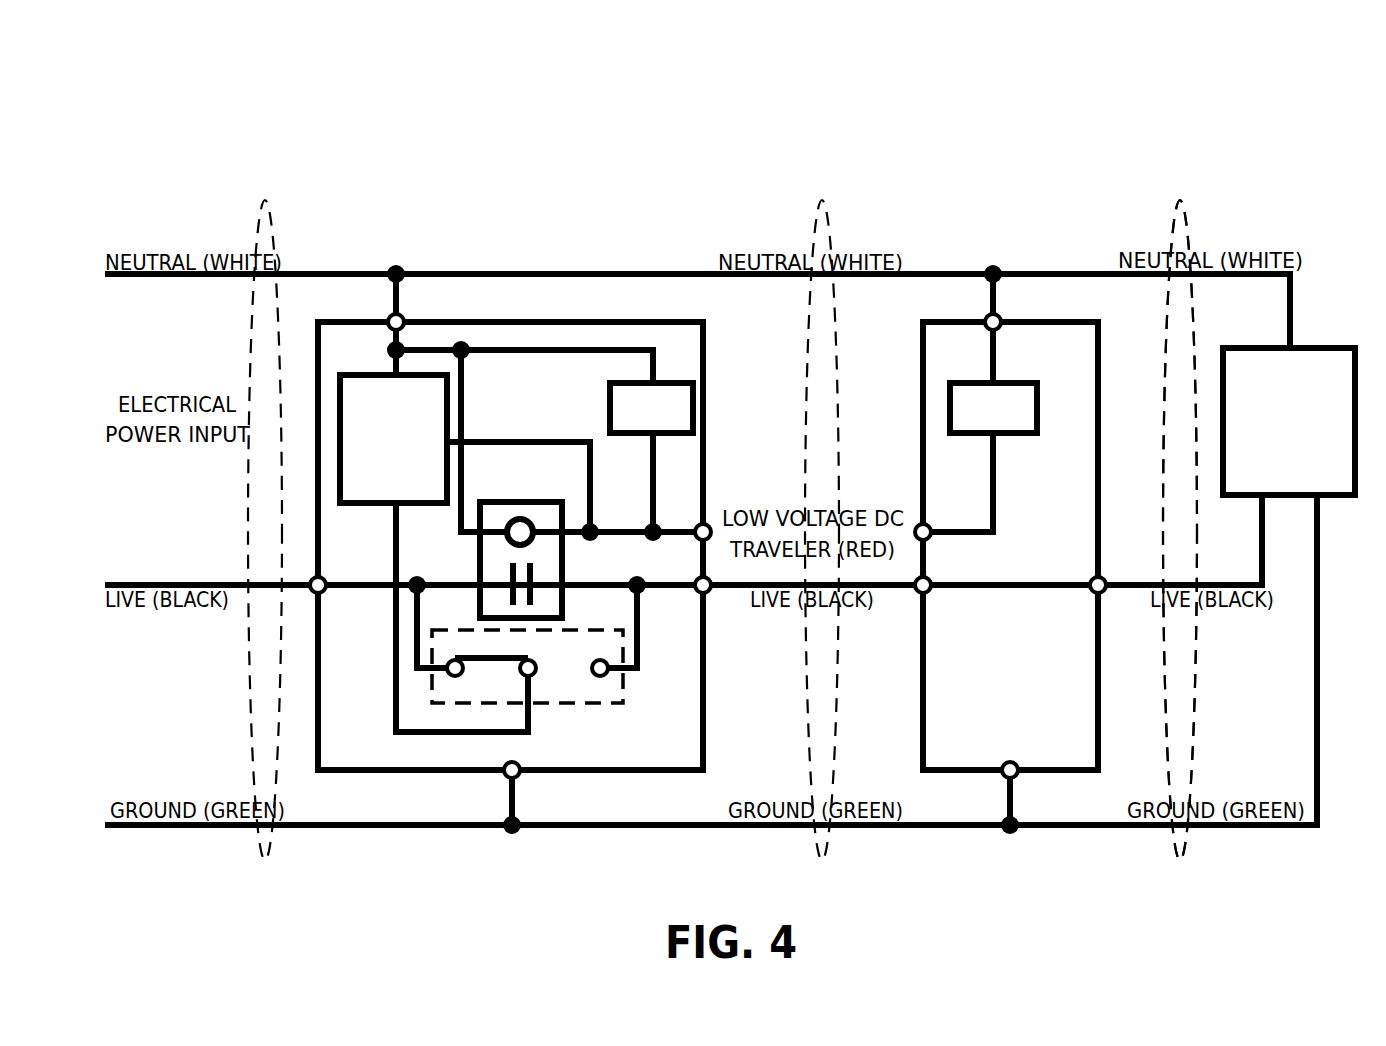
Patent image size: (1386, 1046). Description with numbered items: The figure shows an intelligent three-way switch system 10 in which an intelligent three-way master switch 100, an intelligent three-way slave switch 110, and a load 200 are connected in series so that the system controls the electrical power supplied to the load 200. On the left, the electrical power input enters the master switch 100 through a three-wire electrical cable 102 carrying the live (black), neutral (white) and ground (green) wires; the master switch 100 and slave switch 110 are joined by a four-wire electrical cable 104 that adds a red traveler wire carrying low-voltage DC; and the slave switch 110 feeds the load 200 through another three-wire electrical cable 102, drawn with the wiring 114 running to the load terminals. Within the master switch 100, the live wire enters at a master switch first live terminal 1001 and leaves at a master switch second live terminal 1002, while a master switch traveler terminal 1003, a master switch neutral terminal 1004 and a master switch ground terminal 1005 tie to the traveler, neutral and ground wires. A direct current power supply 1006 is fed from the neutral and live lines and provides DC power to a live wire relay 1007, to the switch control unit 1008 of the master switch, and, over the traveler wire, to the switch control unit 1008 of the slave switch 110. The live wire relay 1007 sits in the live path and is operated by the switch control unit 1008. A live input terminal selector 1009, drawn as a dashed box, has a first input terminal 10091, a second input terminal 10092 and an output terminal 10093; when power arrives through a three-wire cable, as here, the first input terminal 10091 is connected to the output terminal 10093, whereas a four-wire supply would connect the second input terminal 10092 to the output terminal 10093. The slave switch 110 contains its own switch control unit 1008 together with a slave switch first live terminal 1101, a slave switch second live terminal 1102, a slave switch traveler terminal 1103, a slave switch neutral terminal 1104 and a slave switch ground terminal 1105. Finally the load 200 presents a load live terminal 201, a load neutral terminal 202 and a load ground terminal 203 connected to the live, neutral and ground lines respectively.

The intelligent three-way switch system 10 is at (138, 110).
The intelligent three-way master switch 100 is at (500, 318).
The three-wire electrical cable 102 is at (255, 237).
The four-wire electrical cable 104 is at (810, 243).
The intelligent three-way slave switch 110 is at (932, 318).
The wires to load 114 is at (1197, 702).
The load 200 is at (1312, 346).
The load live terminal 201 is at (1258, 522).
The load neutral terminal 202 is at (1287, 332).
The load ground terminal 203 is at (1320, 525).
The master switch first live terminal 1001 is at (323, 593).
The master switch second live terminal 1002 is at (698, 593).
The master switch traveler terminal 1003 is at (712, 525).
The master switch neutral terminal 1004 is at (388, 318).
The master switch ground terminal 1005 is at (505, 773).
The direct current (DC) power supply 1006 is at (449, 410).
The live wire relay 1007 is at (545, 500).
The switch control unit 1008 is at (608, 402).
The live input terminal selector 1009 is at (625, 695).
The first input terminal 10091 is at (445, 672).
The second input terminal 10092 is at (601, 678).
The output terminal 10093 is at (531, 678).
The slave switch first live terminal 1101 is at (1093, 593).
The slave switch second live terminal 1102 is at (930, 593).
The slave switch traveler terminal 1103 is at (915, 525).
The slave switch neutral terminal 1104 is at (1001, 328).
The slave switch ground terminal 1105 is at (1012, 762).